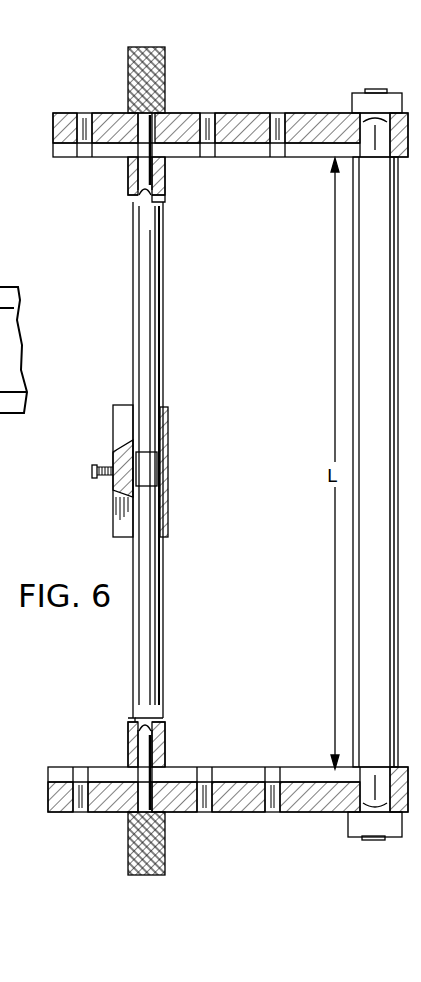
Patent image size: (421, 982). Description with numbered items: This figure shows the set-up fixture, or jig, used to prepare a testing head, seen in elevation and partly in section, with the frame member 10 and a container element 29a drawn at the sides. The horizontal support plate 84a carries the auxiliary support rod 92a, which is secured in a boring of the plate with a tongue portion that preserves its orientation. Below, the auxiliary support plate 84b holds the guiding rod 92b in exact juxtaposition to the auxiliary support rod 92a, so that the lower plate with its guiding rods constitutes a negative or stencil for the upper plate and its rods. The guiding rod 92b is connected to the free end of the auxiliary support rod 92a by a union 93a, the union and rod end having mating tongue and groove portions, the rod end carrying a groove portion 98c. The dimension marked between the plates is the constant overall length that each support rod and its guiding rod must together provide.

The frame tube 10 is at (387, 462).
The roller 29a is at (15, 334).
The support plate 84a is at (238, 113).
The auxiliary support plate 84b is at (238, 767).
The auxiliary support rod 92a is at (163, 325).
The guiding rod 92b is at (163, 603).
The union 93a is at (112, 492).
The groove portion 98c is at (166, 440).